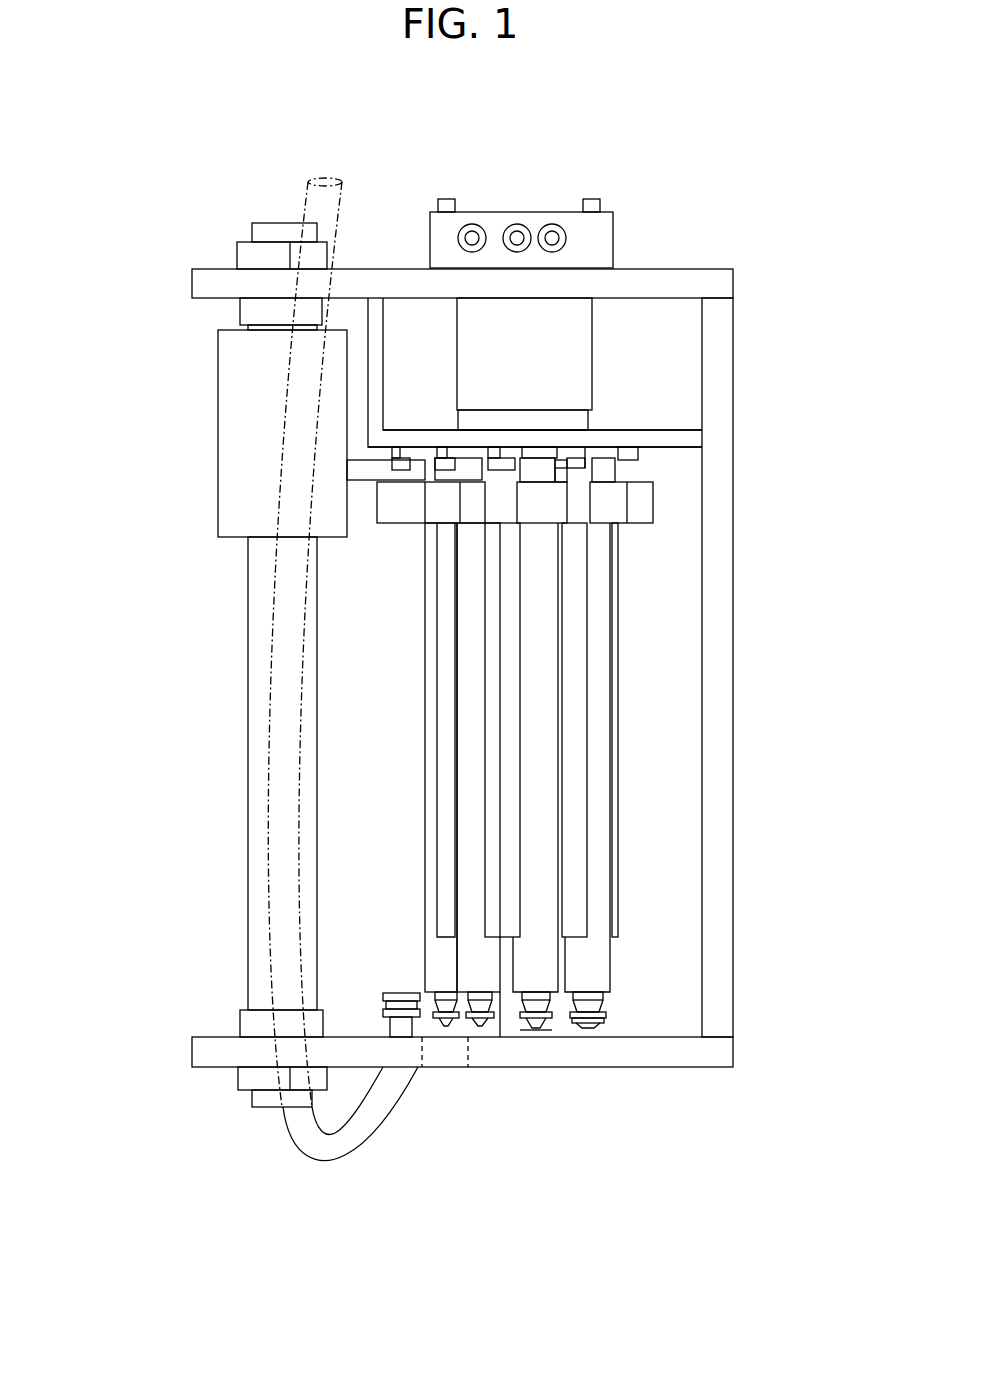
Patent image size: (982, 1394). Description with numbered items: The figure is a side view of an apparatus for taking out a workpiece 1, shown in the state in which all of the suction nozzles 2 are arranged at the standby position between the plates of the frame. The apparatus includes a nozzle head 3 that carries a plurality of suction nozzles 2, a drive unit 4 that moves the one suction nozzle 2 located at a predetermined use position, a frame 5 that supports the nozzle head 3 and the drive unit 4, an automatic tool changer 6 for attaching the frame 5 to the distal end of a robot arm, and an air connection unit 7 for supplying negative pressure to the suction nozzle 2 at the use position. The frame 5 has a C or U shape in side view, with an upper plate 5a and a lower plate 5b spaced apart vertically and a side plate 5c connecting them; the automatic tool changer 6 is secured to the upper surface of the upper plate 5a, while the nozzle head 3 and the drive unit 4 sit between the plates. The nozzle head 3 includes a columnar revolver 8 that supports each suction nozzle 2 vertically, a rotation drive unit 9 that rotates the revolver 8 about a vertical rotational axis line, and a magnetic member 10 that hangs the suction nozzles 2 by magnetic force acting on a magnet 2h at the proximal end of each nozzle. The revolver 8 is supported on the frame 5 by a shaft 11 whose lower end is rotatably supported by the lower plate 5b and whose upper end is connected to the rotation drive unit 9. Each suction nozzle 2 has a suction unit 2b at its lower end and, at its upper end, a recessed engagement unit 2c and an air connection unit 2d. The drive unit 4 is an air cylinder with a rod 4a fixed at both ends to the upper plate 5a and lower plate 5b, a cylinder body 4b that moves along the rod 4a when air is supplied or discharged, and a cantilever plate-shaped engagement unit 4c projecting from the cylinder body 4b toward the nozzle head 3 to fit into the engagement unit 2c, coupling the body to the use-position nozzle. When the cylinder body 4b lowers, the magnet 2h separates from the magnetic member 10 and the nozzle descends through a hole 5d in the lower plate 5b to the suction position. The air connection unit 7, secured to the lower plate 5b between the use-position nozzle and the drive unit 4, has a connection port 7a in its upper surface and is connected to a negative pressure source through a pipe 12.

The apparatus for taking out a workpiece 1 is at (150, 148).
The suction nozzle 2 is at (467, 665).
The suction unit 2b is at (603, 1010).
The engagement unit 2c is at (403, 462).
The air connection unit 2d is at (653, 500).
The magnet 2h is at (494, 458).
The nozzle head 3 is at (682, 890).
The drive unit 4 is at (170, 362).
The rod 4a is at (248, 700).
The cylinder body 4b is at (218, 432).
The engagement unit 4c is at (360, 480).
The frame 5 is at (733, 410).
The upper plate 5a is at (668, 268).
The lower plate 5b is at (683, 1067).
The side plate 5c is at (733, 705).
The hole 5d is at (425, 1050).
The automatic tool changer 6 is at (513, 212).
The air connection unit 7 is at (385, 1005).
The connection port 7a is at (400, 992).
The revolver 8 is at (618, 600).
The rotation drive unit 9 is at (592, 325).
The magnetic member 10 is at (666, 430).
The shaft 11 is at (548, 1030).
The pipe 12 is at (325, 1163).